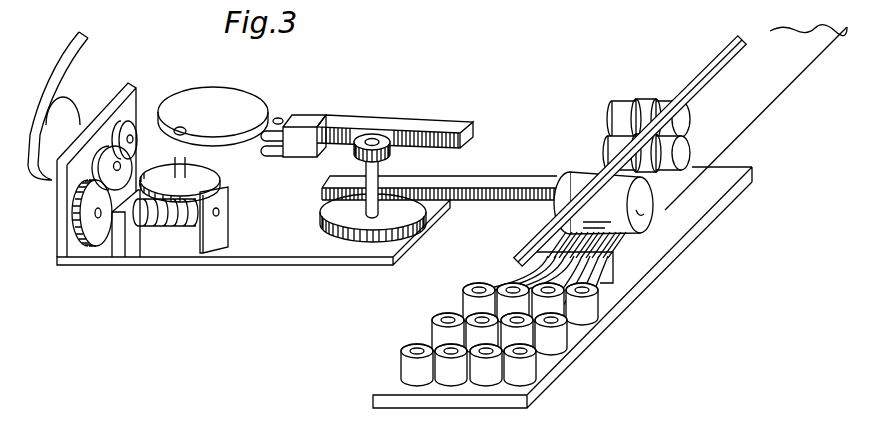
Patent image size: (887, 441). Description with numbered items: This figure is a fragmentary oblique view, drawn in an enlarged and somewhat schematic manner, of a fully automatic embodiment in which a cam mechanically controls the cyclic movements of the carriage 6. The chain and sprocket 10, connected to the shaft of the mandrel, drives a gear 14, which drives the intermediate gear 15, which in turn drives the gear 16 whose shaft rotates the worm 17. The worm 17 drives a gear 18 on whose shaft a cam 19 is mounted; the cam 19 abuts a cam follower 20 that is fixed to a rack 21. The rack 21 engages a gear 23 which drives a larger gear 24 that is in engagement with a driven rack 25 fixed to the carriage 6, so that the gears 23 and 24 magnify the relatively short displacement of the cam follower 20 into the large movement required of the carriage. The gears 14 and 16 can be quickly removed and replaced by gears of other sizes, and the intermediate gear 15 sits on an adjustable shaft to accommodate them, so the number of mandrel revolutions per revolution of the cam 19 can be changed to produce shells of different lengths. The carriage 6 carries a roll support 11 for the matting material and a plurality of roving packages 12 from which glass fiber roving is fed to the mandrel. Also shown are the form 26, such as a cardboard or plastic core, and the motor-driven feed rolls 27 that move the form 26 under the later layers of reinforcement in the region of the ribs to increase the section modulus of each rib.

The carriage 6 is at (674, 250).
The chain sprocket 10 is at (64, 92).
The roll support 11 is at (650, 194).
The roving packages 12 is at (512, 280).
The gear 14 is at (134, 100).
The intermediate gear 15 is at (86, 169).
The gear 16 is at (80, 228).
The worm 17 is at (163, 223).
The gear 18 is at (205, 177).
The cam 19 is at (232, 88).
The cam follower 20 is at (264, 143).
The rack 21 is at (362, 92).
The gear 23 is at (368, 136).
The larger gear 24 is at (343, 222).
The driven rack 25 is at (500, 183).
The form 26 is at (552, 228).
The feed rolls 27 is at (608, 150).